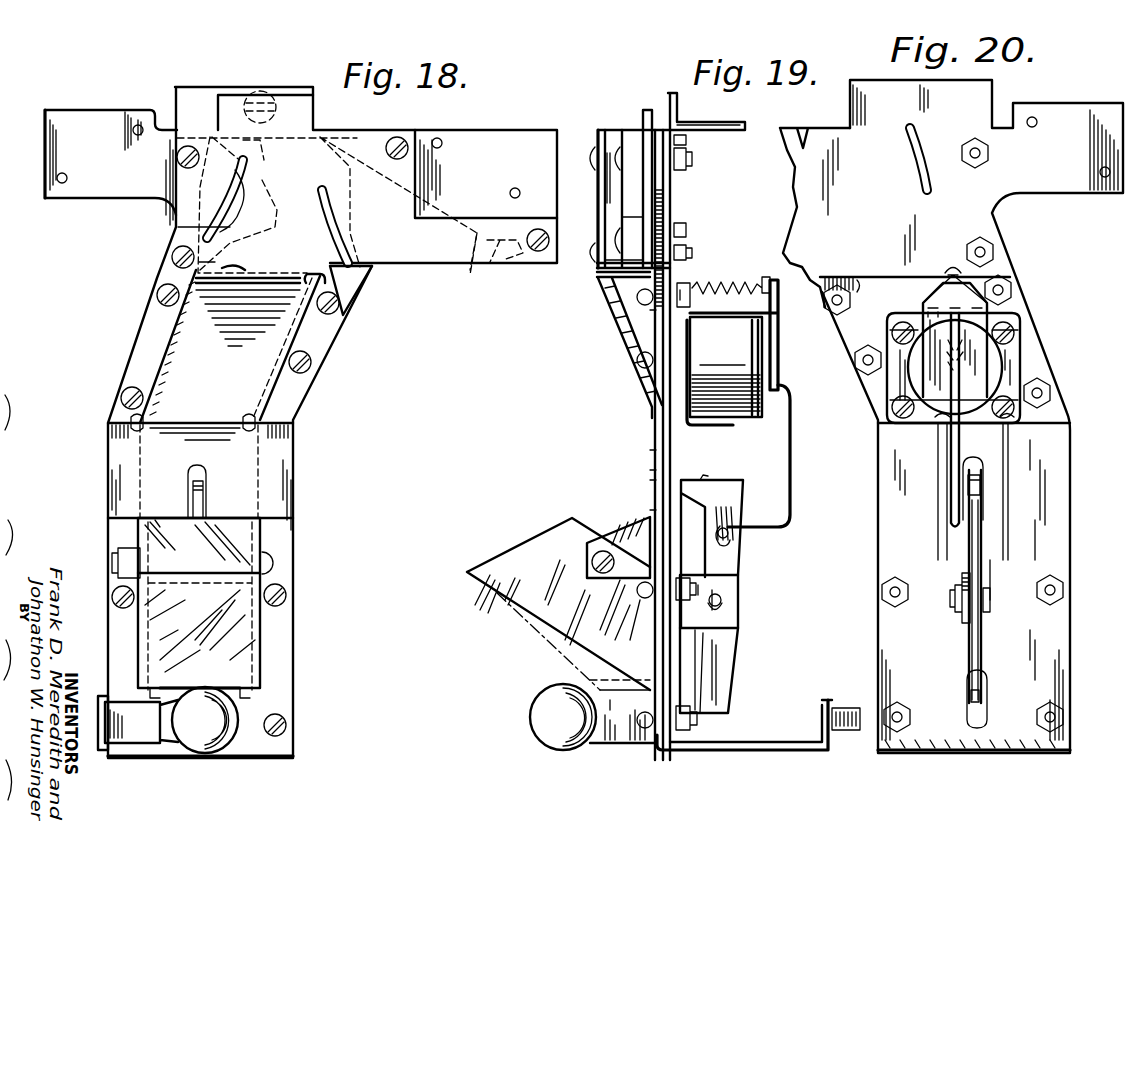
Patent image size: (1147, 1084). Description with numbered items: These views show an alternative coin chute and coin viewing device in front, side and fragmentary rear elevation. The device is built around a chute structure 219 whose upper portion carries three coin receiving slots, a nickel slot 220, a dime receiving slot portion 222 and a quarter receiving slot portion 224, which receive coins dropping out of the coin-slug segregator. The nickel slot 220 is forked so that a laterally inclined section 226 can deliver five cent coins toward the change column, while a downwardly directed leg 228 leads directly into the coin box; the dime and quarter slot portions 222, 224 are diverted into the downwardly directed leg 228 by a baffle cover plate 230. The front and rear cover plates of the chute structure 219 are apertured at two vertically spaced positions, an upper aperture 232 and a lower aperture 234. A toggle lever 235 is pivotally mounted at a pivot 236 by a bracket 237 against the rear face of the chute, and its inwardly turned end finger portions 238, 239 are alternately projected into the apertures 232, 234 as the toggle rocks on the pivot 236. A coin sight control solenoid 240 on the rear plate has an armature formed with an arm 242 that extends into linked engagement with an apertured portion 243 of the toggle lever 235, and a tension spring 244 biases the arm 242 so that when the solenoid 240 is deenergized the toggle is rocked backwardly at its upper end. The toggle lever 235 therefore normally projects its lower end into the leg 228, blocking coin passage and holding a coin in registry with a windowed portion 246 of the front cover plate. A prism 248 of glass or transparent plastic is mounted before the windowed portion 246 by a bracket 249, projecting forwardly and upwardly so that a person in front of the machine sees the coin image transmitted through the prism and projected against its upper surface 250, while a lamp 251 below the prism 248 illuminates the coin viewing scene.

In FIG. 18, the chute structure 219 is at (113, 359).
In FIG. 19, the chute structure 219 is at (639, 443).
In FIG. 20, the chute structure 219 is at (1068, 500).
In FIG. 19, the nickel slot 220 is at (657, 135).
In FIG. 19, the dime receiving slot portion 222 is at (634, 132).
In FIG. 19, the quarter receiving slot portion 224 is at (607, 132).
In FIG. 18, the laterally inclined section 226 is at (470, 275).
In FIG. 18, the downwardly directed leg 228 is at (140, 485).
In FIG. 18, the baffle cover plate 230 is at (236, 373).
In FIG. 19, the baffle cover plate 230 is at (632, 328).
In FIG. 18, the aperture 232 is at (205, 468).
In FIG. 19, the aperture 232 is at (650, 480).
In FIG. 20, the aperture 232 is at (983, 468).
In FIG. 19, the aperture 234 is at (700, 683).
In FIG. 20, the aperture 234 is at (990, 705).
In FIG. 19, the toggle lever 235 is at (730, 568).
In FIG. 20, the toggle lever 235 is at (975, 637).
In FIG. 19, the pivot 236 is at (722, 603).
In FIG. 20, the pivot 236 is at (955, 598).
In FIG. 19, the bracket 237 is at (735, 590).
In FIG. 18, the end finger portion 238 is at (203, 497).
In FIG. 19, the end finger portion 238 is at (695, 500).
In FIG. 20, the end finger portion 238 is at (975, 492).
In FIG. 19, the end finger portion 239 is at (712, 712).
In FIG. 20, the end finger portion 239 is at (970, 693).
In FIG. 19, the coin sight control solenoid 240 is at (748, 354).
In FIG. 20, the coin sight control solenoid 240 is at (995, 367).
In FIG. 19, the arm 242 is at (790, 475).
In FIG. 20, the arm 242 is at (955, 455).
In FIG. 19, the apertured portion 243 is at (732, 540).
In FIG. 19, the tension spring 244 is at (733, 285).
In FIG. 20, the tension spring 244 is at (953, 272).
In FIG. 18, the windowed portion 246 is at (260, 632).
In FIG. 19, the windowed portion 246 is at (656, 660).
In FIG. 18, the prism 248 is at (165, 640).
In FIG. 19, the prism 248 is at (547, 540).
In FIG. 18, the bracket 249 is at (140, 535).
In FIG. 19, the bracket 249 is at (622, 535).
In FIG. 18, the upper surface 250 is at (245, 548).
In FIG. 19, the upper surface 250 is at (497, 565).
In FIG. 18, the lamp 251 is at (210, 750).
In FIG. 19, the lamp 251 is at (562, 750).